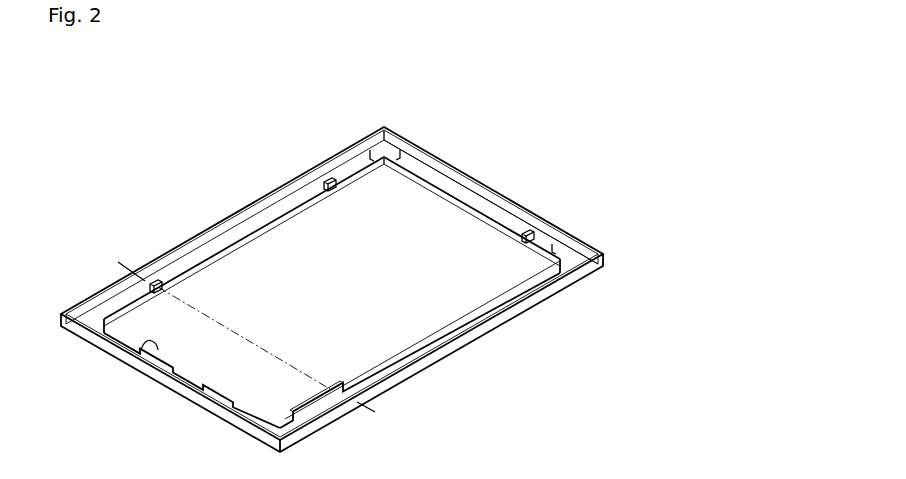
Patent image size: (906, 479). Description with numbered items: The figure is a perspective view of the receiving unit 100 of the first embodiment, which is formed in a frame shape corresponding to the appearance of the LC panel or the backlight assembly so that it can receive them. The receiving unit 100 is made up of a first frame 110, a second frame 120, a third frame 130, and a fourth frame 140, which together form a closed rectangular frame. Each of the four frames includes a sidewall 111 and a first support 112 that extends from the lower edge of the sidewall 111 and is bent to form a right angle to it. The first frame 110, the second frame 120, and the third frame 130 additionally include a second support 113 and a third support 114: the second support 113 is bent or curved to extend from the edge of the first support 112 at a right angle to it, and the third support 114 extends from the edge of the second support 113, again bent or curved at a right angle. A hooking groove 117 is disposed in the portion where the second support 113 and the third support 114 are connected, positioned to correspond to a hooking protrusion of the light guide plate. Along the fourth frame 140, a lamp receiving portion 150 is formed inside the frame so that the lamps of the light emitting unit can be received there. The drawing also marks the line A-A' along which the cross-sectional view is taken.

The receiving unit 100 is at (327, 255).
The first frame 110 is at (332, 273).
The sidewall 111 is at (245, 207).
The first support 112 is at (377, 153).
The second support 113 is at (357, 178).
The third support 114 is at (301, 197).
The hooking groove 117 is at (330, 178).
The second frame 120 is at (486, 176).
The third frame 130 is at (487, 342).
The fourth frame 140 is at (170, 404).
The lamp receiving portion 150 is at (141, 347).